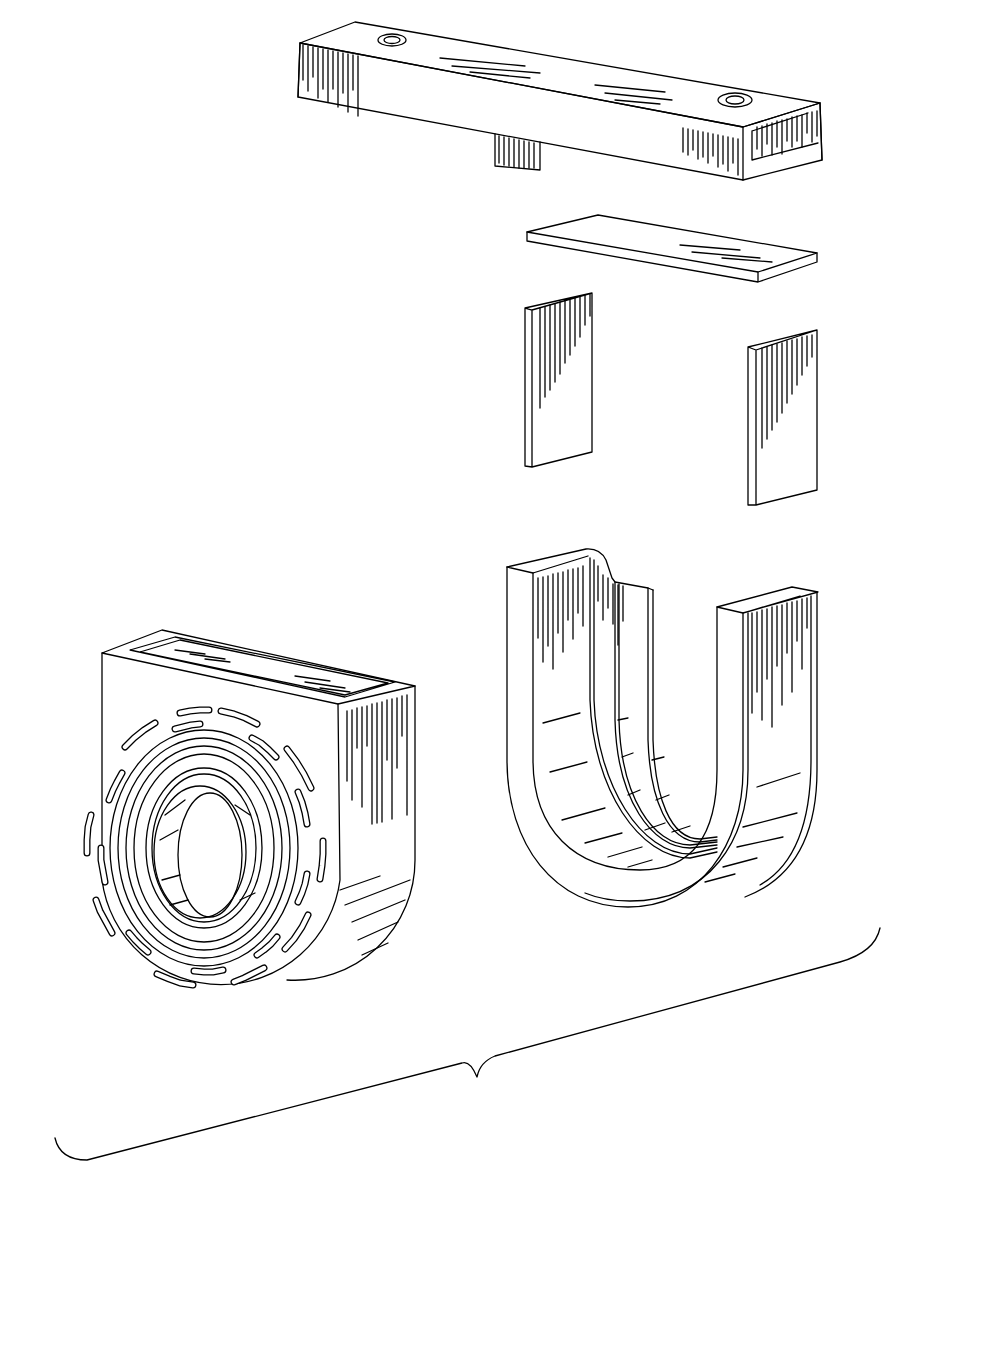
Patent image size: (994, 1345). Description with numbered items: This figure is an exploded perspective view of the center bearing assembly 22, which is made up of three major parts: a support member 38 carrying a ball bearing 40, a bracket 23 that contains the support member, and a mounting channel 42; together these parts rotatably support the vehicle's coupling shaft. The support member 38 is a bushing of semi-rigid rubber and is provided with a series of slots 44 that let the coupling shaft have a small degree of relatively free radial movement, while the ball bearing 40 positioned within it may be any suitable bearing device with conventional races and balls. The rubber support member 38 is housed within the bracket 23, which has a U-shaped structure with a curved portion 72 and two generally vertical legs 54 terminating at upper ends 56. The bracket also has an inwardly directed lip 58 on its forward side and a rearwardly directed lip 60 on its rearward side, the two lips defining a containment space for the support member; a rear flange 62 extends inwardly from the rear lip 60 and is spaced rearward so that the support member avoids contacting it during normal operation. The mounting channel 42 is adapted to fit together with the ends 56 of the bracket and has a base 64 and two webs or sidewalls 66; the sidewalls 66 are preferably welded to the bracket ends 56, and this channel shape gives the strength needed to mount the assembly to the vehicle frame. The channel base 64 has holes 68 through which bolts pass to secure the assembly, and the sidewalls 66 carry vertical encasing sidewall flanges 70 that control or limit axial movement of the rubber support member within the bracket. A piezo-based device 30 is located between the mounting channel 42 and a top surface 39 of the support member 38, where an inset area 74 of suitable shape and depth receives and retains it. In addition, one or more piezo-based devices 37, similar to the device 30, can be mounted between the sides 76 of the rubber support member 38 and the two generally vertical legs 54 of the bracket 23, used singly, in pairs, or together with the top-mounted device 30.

The center bearing assembly 22 is at (283, 410).
The bracket 23 is at (820, 674).
The piezo-based device 30 is at (560, 245).
The piezo-based devices 37 is at (752, 413).
The support member 38 is at (109, 620).
The top surface 39 is at (228, 639).
The ball bearing 40 is at (186, 870).
The mounting channel 42 is at (272, 73).
The slots 44 is at (108, 805).
The generally vertical legs 54 is at (576, 575).
The upper ends 56 is at (548, 556).
The inwardly directed lip 58 is at (522, 738).
The rearwardly directed lip 60 is at (616, 652).
The rear flange 62 is at (661, 752).
The base 64 is at (336, 28).
The sidewalls 66 is at (352, 116).
The holes 68 is at (394, 34).
The vertical encasing sidewall flanges 70 is at (492, 151).
The curved portion 72 is at (616, 906).
The inset area 74 is at (305, 678).
The sides 76 is at (416, 831).